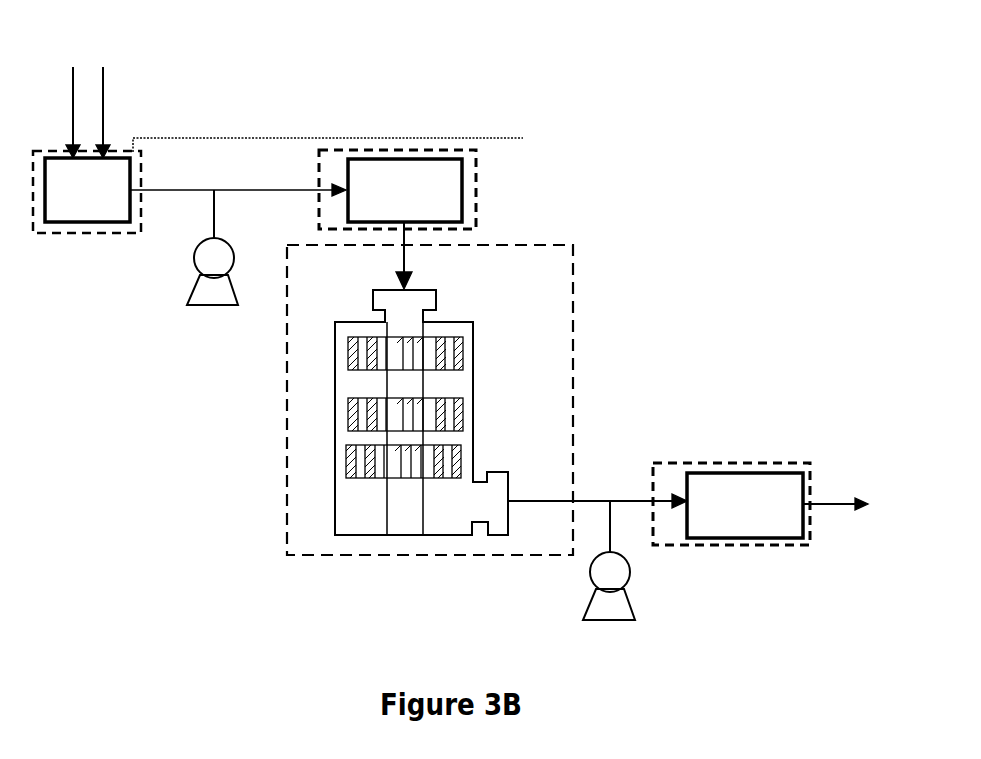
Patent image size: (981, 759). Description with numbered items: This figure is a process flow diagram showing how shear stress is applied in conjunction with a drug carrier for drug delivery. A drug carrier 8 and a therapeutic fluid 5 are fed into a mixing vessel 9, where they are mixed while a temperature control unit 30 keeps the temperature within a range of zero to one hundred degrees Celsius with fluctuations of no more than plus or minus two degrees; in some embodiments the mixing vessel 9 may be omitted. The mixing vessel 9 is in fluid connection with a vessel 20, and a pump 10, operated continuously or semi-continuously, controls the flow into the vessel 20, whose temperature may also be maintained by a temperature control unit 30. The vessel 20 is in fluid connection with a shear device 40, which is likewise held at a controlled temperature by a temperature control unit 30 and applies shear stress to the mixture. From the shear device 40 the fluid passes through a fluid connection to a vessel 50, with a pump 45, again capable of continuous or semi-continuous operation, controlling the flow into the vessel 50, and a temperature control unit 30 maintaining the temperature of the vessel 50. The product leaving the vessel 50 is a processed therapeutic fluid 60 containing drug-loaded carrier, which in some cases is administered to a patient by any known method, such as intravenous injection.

The therapeutic fluid 5 is at (73, 93).
The drug carrier 8 is at (103, 93).
The mixing vessel 9 is at (87, 192).
The pump 10 is at (194, 258).
The vessel 20 is at (405, 224).
The temperature control unit 30 is at (745, 462).
The shear device 40 is at (462, 320).
The pump 45 is at (590, 571).
The vessel 50 is at (745, 505).
The processed therapeutic fluid 60 is at (833, 504).